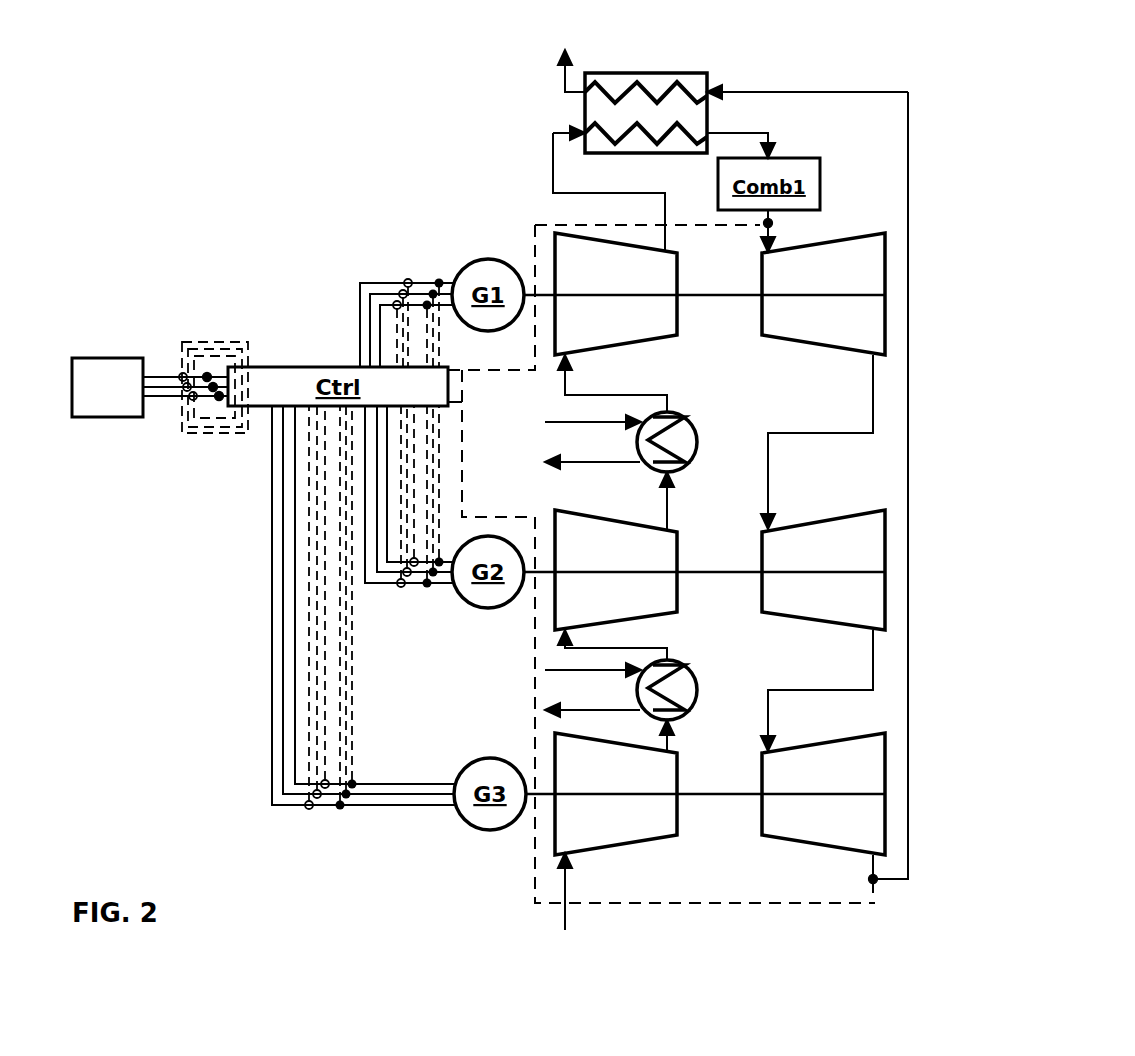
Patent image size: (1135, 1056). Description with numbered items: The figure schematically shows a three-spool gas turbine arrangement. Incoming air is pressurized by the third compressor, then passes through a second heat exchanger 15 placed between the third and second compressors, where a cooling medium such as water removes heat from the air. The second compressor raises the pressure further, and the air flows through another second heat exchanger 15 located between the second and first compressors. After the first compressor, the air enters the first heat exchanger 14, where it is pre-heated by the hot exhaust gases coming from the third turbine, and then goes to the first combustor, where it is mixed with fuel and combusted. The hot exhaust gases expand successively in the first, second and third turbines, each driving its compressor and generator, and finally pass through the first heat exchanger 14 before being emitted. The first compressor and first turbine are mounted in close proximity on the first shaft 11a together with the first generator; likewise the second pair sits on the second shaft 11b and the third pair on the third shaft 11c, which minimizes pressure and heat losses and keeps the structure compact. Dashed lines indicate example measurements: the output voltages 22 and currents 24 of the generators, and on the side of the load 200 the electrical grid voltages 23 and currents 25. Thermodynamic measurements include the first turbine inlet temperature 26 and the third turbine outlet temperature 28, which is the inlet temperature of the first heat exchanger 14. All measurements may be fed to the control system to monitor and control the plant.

The first heat exchanger 14 is at (707, 73).
The first turbine inlet temperature 26 is at (780, 223).
The third turbine outlet temperature 28 is at (866, 879).
The first shaft 11a is at (686, 290).
The second shaft 11b is at (686, 568).
The third shaft 11c is at (686, 790).
The second heat exchanger 15 is at (700, 440).
The load 200 is at (107, 387).
The electrical grid voltages 23 is at (211, 372).
The electrical grid currents 25 is at (192, 401).
The currents 24 is at (404, 280).
The output voltages 22 is at (436, 278).